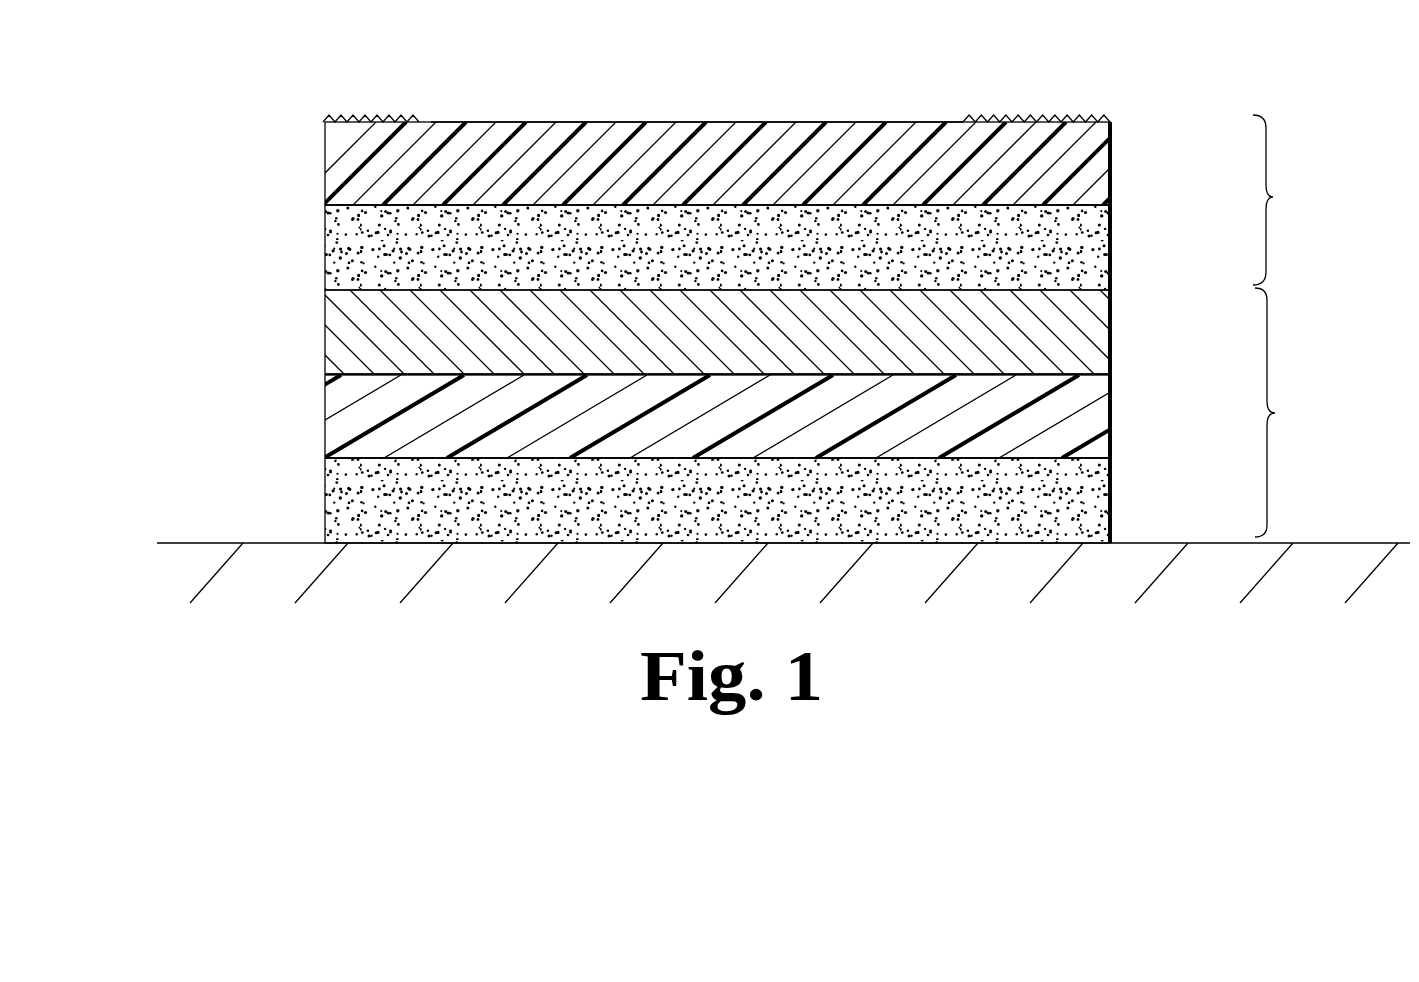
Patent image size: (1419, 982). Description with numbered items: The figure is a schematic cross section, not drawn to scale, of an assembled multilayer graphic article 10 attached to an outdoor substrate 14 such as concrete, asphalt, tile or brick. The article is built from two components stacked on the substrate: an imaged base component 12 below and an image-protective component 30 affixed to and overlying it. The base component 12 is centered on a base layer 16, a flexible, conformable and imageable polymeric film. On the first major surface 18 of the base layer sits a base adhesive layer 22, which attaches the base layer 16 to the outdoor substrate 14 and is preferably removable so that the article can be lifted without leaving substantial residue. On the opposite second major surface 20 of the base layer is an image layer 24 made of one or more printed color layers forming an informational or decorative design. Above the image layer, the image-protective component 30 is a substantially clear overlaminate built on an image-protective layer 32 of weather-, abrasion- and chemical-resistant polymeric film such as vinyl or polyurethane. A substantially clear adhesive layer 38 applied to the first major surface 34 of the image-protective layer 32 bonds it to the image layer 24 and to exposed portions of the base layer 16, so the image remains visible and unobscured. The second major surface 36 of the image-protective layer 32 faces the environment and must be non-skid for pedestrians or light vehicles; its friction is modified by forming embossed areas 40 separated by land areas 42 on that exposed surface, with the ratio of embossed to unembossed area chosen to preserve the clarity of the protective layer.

The multilayer graphic article 10 is at (185, 124).
The imaged base component 12 is at (1291, 412).
The outdoor substrate 14 is at (223, 543).
The base layer 16 is at (1062, 411).
The first major surface 18 is at (347, 458).
The second major surface 20 is at (367, 374).
The base adhesive layer 22 is at (1053, 497).
The image layer 24 is at (1060, 342).
The image-protective component 30 is at (1289, 200).
The image-protective layer 32 is at (1083, 168).
The first major surface 34 is at (373, 207).
The second major surface 36 is at (340, 64).
The adhesive layer 38 is at (1063, 247).
The embossed areas 40 is at (390, 118).
The land areas 42 is at (747, 121).